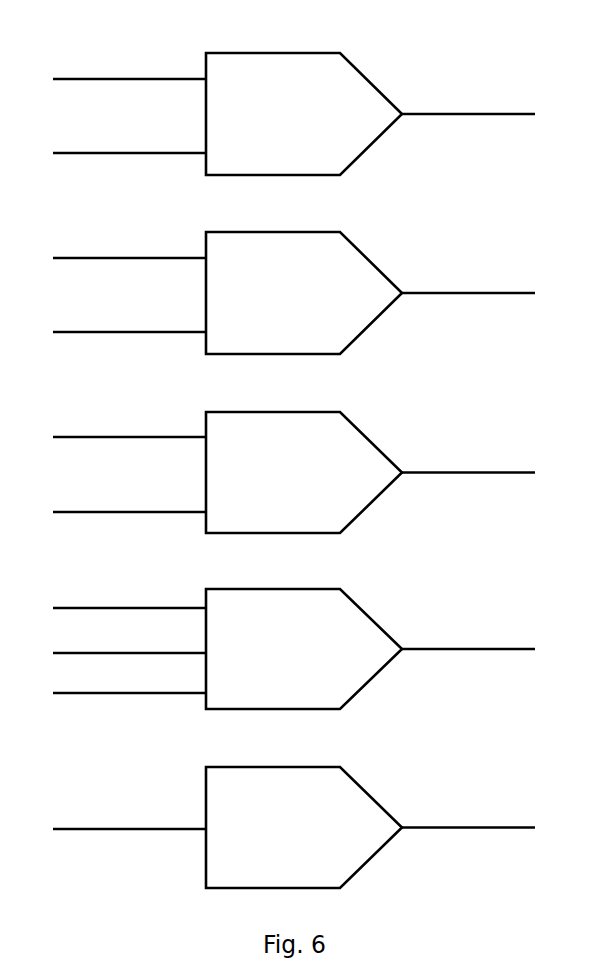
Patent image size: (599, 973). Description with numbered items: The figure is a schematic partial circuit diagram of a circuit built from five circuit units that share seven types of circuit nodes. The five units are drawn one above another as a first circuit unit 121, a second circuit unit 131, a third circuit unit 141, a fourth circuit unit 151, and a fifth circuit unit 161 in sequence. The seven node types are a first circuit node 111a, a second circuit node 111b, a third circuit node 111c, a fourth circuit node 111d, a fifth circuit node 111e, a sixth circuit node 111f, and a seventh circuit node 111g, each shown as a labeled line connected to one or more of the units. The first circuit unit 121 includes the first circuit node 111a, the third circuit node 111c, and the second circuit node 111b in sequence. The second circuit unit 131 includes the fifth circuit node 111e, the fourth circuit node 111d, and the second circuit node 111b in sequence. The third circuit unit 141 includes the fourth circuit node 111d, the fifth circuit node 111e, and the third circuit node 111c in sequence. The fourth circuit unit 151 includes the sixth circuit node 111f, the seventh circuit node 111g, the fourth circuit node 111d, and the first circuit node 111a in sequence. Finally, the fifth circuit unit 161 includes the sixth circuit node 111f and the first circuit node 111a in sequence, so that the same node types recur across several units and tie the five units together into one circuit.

The first circuit node 111a is at (294, 440).
The second circuit node 111b is at (129, 229).
The third circuit node 111c is at (294, 300).
The fourth circuit node 111d is at (294, 460).
The fifth circuit node 111e is at (294, 352).
The sixth circuit node 111f is at (129, 705).
The seventh circuit node 111g is at (468, 636).
The first circuit unit 121 is at (304, 114).
The second circuit unit 131 is at (304, 293).
The third circuit unit 141 is at (304, 472).
The fourth circuit unit 151 is at (304, 649).
The fifth circuit unit 161 is at (304, 827).